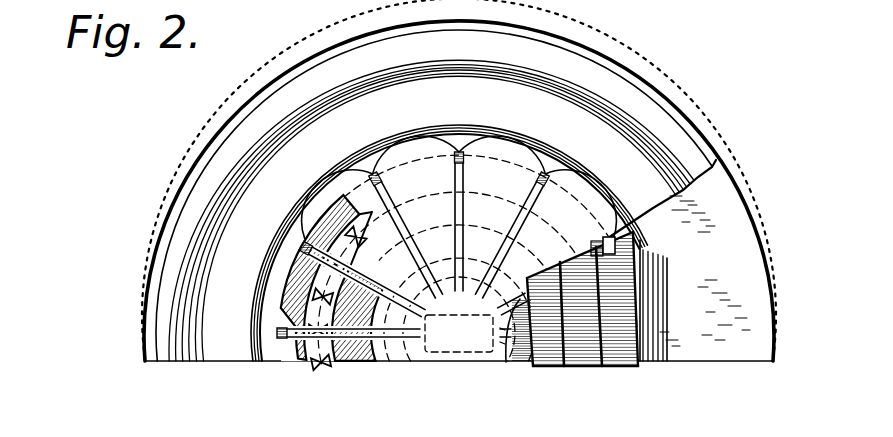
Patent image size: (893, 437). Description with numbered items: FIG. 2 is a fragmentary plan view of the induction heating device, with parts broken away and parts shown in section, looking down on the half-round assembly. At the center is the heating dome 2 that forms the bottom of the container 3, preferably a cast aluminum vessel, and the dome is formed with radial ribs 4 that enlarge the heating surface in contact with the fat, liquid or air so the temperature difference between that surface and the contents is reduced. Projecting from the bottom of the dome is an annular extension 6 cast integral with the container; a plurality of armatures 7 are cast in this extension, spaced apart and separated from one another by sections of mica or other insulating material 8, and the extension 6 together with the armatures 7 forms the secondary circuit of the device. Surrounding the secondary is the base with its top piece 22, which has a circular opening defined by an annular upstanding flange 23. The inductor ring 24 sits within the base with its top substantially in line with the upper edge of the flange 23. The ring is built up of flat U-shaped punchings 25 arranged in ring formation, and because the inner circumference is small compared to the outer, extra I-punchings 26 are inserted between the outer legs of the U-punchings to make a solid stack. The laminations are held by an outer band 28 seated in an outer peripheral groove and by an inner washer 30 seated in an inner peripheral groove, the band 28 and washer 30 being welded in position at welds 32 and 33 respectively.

The heating dome 2 is at (412, 163).
The container 3 is at (199, 161).
The radial ribs 4 is at (530, 188).
The annular extension 6 is at (332, 298).
The armatures 7 is at (360, 233).
The insulating material 8 is at (286, 330).
The top piece 22 is at (753, 313).
The annular upstanding flange 23 is at (643, 333).
The inductor ring 24 is at (630, 288).
The U-shaped punchings 25 is at (634, 308).
The I-punchings 26 is at (638, 315).
The outer band 28 is at (615, 243).
The inner washer 30 is at (510, 361).
The weld 32 is at (597, 243).
The weld 33 is at (530, 358).